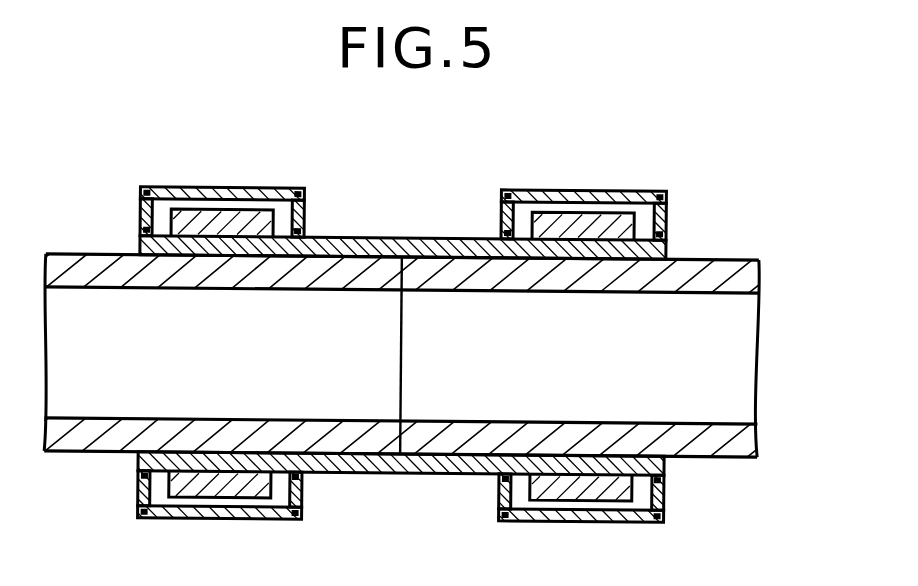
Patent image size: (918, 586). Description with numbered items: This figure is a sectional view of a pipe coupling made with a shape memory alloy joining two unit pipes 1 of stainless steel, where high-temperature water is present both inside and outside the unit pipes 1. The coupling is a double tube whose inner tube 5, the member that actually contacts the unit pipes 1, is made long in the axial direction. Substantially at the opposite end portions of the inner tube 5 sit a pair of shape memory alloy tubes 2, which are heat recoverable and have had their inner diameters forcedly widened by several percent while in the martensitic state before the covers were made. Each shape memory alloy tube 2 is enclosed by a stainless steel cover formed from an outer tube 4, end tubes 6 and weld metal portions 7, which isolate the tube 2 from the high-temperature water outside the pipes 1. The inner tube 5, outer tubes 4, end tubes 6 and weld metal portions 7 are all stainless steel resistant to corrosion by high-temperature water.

The unit pipe 1 is at (107, 443).
The shape memory alloy tube 2 is at (208, 220).
The outer tube 4 is at (245, 196).
The inner tube 5 is at (395, 240).
The end tube 6 is at (139, 211).
The weld metal portion 7 is at (144, 191).